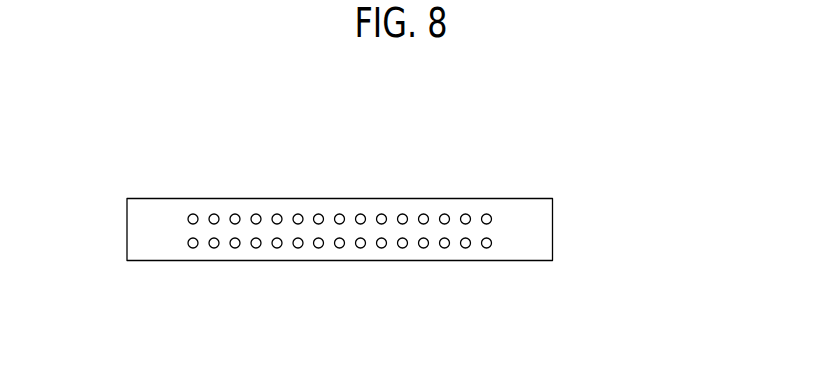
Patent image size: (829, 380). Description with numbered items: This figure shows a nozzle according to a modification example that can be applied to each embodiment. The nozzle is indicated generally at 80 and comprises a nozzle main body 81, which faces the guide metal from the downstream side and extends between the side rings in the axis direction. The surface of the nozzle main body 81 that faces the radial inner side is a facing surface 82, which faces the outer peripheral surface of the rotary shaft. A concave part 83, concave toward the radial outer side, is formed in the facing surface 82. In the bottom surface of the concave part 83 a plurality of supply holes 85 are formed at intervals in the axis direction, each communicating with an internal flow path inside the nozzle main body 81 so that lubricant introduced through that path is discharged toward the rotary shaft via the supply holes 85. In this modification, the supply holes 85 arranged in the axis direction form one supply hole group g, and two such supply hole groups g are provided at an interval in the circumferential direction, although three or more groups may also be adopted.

The inspection board 80 is at (596, 248).
The nozzle main body 81 is at (561, 232).
The facing surface 82 is at (448, 263).
The concave part 83 is at (393, 253).
The supply holes 85 is at (360, 214).
The supply hole group g is at (184, 215).